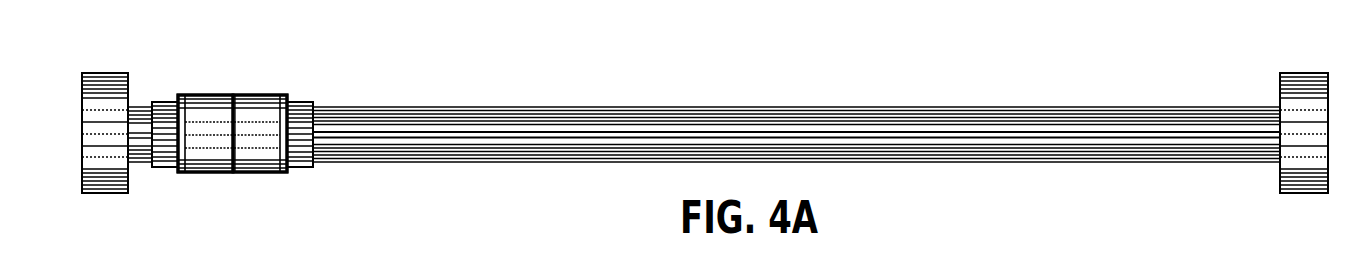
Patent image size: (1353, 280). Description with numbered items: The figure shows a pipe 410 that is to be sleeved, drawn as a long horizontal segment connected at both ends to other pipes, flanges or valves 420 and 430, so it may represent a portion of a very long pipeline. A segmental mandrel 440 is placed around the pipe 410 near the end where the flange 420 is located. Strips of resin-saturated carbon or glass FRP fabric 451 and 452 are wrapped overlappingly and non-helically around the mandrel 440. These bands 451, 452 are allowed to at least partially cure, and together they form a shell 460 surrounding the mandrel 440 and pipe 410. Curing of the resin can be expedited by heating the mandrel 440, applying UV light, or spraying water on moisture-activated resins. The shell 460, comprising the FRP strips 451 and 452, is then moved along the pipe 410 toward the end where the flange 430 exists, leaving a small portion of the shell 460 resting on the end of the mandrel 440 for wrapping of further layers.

The pipe 410 is at (907, 135).
The flange 420 is at (102, 95).
The flange 430 is at (1307, 92).
The segmental mandrel 440 is at (302, 120).
The FRP fabric strip 451 is at (262, 113).
The FRP fabric strip 452 is at (208, 112).
The shell 460 is at (244, 122).